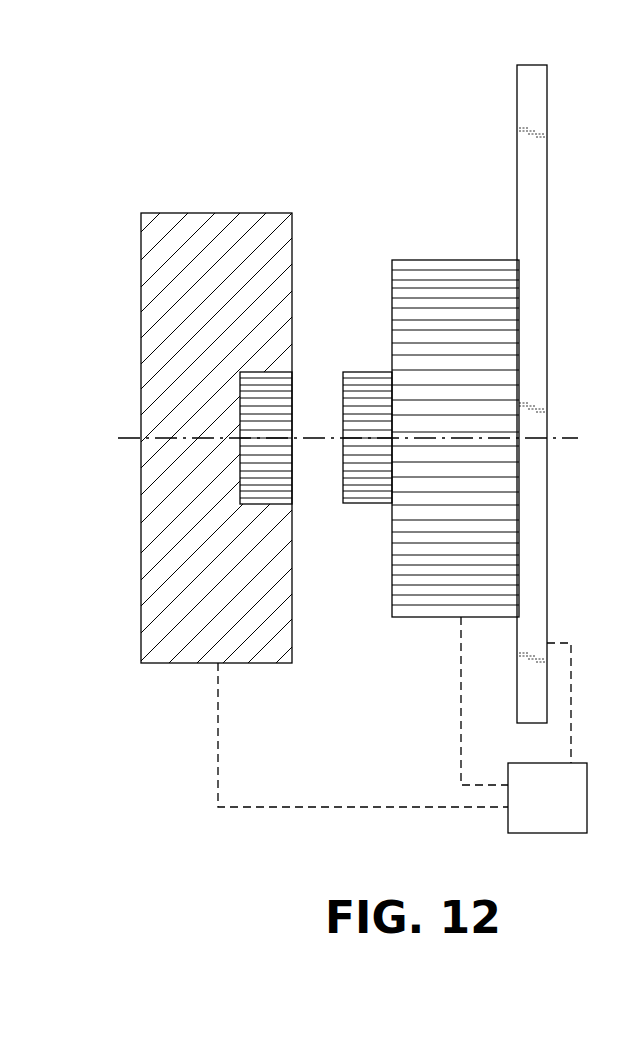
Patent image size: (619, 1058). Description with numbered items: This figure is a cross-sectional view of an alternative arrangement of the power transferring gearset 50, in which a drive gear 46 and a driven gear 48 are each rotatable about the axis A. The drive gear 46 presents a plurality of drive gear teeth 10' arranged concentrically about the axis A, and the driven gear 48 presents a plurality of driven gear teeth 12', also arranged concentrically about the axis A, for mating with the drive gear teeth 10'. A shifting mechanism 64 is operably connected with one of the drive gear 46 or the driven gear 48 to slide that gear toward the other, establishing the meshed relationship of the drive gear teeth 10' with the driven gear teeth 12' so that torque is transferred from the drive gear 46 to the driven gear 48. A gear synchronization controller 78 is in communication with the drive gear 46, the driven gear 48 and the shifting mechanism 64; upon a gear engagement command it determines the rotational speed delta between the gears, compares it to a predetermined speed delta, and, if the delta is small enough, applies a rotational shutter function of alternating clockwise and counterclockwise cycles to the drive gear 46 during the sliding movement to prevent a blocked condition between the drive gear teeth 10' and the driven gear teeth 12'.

The power transferring gearset 50 is at (283, 96).
The shifting mechanism 64 is at (531, 65).
The drive gear 46 is at (455, 260).
The drive gear teeth 10' is at (356, 395).
The driven gear teeth 12' is at (302, 456).
The driven gear 48 is at (188, 663).
The gear synchronization controller 78 is at (402, 725).
The axis A is at (357, 438).